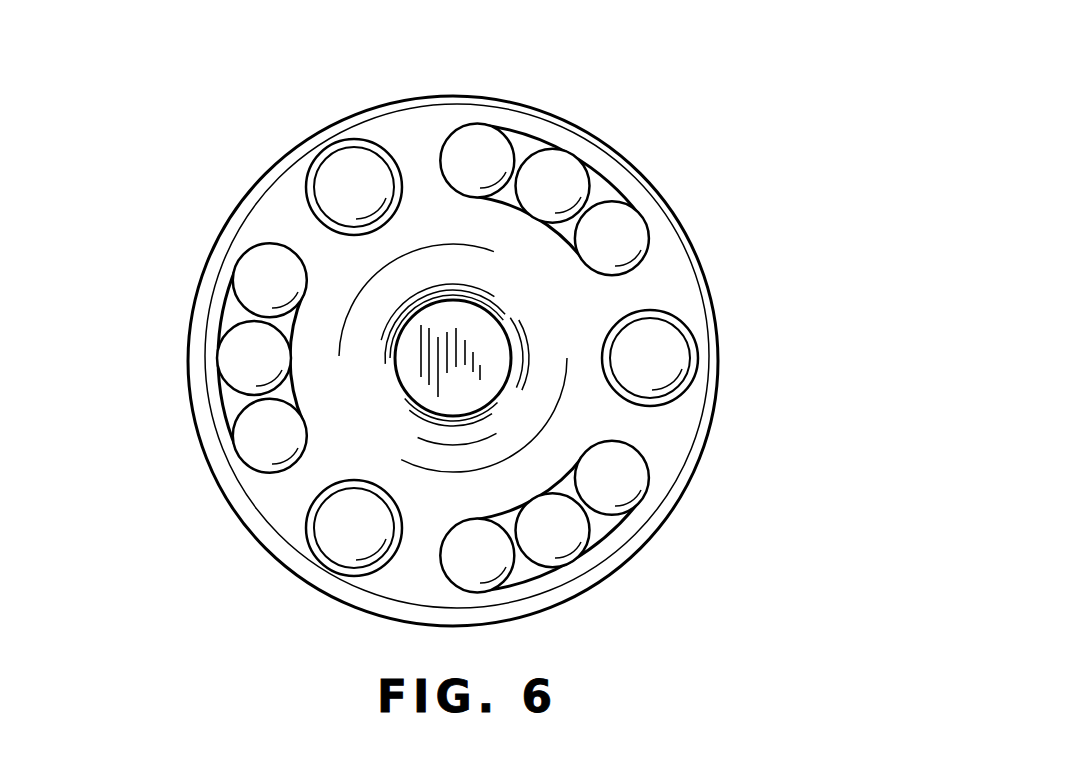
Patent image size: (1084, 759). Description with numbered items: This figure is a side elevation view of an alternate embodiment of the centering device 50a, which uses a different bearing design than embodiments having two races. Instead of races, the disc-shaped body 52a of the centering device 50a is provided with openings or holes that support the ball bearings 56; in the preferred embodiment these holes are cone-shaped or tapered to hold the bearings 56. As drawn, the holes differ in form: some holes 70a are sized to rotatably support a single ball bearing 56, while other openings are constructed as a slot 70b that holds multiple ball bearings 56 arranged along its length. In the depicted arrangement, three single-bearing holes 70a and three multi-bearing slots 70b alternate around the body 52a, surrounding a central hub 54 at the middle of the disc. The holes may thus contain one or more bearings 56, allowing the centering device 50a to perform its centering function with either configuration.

The centering device 50a is at (228, 117).
The disc-shaped body 52a is at (580, 318).
The central hub shaft 54 is at (420, 377).
The ball bearing 56 is at (232, 362).
The hole 70a is at (643, 405).
The slot 70b is at (605, 181).